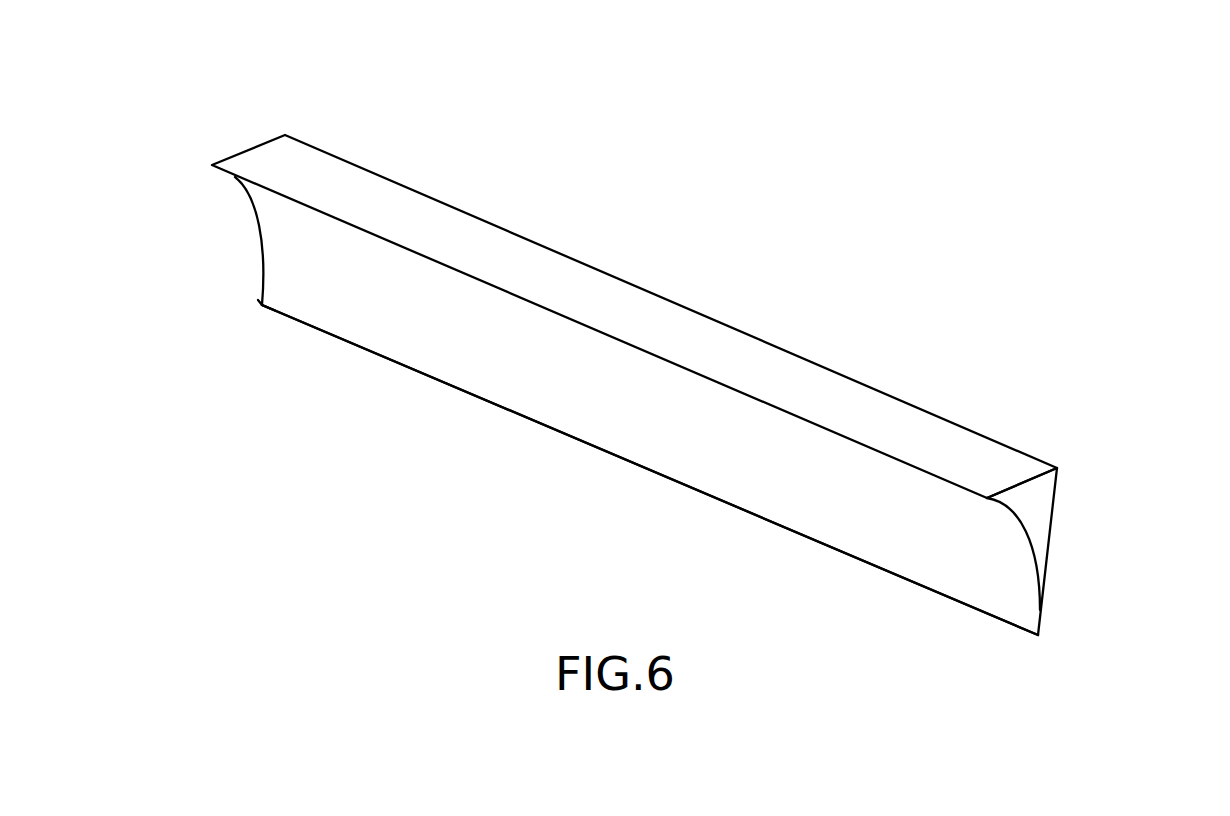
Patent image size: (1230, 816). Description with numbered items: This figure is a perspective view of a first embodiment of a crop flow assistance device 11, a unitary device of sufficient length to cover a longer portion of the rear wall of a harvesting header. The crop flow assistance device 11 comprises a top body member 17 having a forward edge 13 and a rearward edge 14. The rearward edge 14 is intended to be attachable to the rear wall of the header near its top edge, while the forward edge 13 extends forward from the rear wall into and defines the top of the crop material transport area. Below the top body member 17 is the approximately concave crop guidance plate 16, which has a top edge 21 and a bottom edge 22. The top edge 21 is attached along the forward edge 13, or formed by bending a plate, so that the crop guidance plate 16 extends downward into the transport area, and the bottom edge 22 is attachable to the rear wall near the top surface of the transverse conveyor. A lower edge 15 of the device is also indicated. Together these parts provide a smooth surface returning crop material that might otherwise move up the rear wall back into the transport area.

The crop flow assistance device 11 is at (642, 394).
The forward edge 13 is at (632, 368).
The rearward edge 14 is at (1068, 447).
The lower edge of web 15 is at (954, 616).
The crop guidance plate 16 is at (975, 522).
The top body member 17 is at (366, 172).
The top edge 21 is at (243, 205).
The bottom edge 22 is at (261, 321).